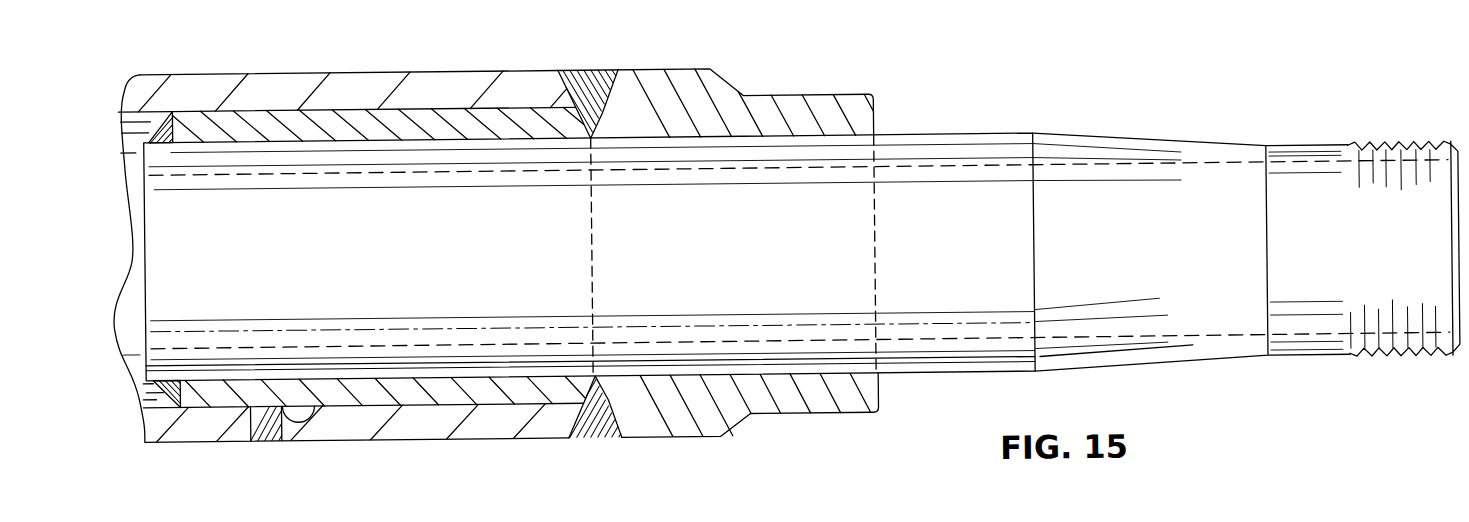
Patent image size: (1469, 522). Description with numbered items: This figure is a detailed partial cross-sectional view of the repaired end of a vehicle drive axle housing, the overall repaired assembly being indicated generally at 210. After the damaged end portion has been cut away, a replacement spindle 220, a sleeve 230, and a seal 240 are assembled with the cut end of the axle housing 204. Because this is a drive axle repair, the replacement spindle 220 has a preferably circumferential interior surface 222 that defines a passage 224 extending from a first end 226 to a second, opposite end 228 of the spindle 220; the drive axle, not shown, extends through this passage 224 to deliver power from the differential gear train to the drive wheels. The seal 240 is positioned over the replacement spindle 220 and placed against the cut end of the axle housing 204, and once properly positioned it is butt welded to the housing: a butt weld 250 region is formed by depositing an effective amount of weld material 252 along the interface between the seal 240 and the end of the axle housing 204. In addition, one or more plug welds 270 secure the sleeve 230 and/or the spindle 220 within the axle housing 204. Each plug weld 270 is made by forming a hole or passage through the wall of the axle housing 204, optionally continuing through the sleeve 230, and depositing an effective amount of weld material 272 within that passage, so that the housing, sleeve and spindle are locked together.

The fiber optic connector assembly 210 is at (233, 52).
The axle housing 204 is at (292, 86).
The replacement spindle 220 is at (378, 150).
The interior surface 222 is at (232, 178).
The passage 224 is at (463, 327).
The first end 226 is at (145, 317).
The second end 228 is at (1468, 334).
The sleeve 230 is at (508, 110).
The seal 240 is at (790, 103).
The butt weld 250 is at (597, 77).
The weld material 252 is at (604, 440).
The plug weld 270 is at (293, 413).
The weld material 272 is at (255, 443).